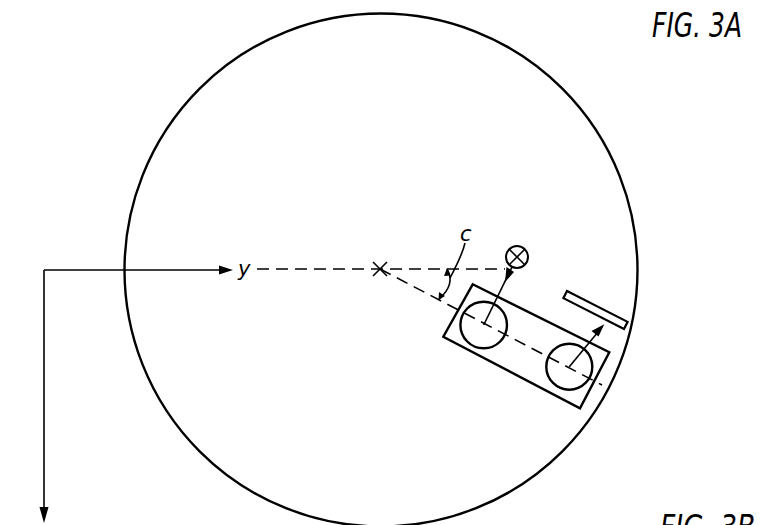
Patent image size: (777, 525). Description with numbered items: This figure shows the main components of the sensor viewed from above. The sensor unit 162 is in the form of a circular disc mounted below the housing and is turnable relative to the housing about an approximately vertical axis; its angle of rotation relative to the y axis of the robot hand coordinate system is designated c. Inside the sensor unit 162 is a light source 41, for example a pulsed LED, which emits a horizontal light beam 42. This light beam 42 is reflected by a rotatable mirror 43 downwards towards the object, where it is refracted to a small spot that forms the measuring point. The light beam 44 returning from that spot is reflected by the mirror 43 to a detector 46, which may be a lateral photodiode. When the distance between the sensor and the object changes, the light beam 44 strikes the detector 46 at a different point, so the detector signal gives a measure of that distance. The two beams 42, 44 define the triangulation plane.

The sensor unit 162 is at (629, 214).
The light source 41 is at (513, 246).
The light beam 42 is at (497, 294).
The rotatable mirror 43 is at (508, 366).
The light beam 44 is at (593, 342).
The detector 46 is at (593, 300).